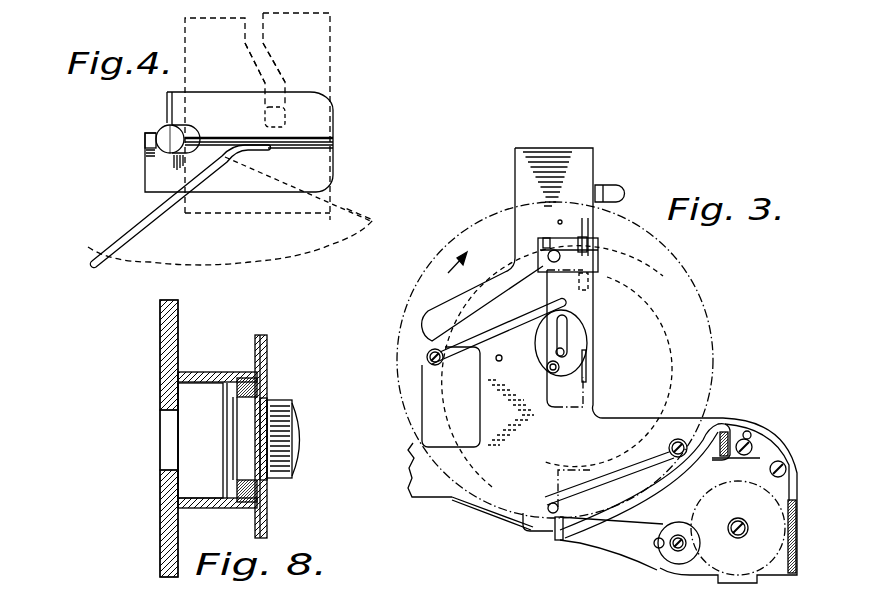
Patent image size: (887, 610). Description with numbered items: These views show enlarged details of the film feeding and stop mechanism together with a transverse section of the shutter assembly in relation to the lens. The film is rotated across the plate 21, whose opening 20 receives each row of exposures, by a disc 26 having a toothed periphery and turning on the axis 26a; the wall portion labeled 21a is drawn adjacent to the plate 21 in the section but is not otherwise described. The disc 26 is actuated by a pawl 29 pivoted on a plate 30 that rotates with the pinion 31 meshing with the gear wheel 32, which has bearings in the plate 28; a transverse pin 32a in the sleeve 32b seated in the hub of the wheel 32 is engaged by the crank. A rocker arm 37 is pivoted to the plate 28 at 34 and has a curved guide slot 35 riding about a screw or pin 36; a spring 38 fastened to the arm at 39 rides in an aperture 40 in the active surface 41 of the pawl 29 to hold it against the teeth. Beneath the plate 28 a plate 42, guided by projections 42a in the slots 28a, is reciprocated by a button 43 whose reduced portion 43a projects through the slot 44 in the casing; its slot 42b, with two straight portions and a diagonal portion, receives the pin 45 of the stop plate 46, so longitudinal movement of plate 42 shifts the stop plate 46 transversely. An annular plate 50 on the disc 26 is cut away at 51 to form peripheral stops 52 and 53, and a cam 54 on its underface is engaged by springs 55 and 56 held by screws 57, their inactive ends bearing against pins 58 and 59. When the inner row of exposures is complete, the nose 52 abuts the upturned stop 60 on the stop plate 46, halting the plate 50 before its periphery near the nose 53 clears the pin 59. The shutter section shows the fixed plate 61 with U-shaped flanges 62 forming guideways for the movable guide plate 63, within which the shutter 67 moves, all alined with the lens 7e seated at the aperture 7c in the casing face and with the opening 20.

In FIG. 8, the opening 20 is at (168, 460).
In FIG. 8, the plate 21 is at (160, 547).
In FIG. 8, the wall opening 21a is at (200, 502).
In FIG. 3, the disc 26 is at (640, 240).
In FIG. 3, the axis 26a is at (550, 366).
In FIG. 3, the plate 28 is at (563, 153).
In FIG. 3, the slots 28a is at (600, 251).
In FIG. 3, the pawl 29 is at (632, 545).
In FIG. 3, the plate 30 is at (738, 528).
In FIG. 3, the pinion 31 is at (677, 532).
In FIG. 3, the gear wheel 32 is at (780, 566).
In FIG. 3, the transverse pin 32a is at (745, 537).
In FIG. 3, the sleeve 32b is at (793, 520).
In FIG. 3, the pivot 34 is at (781, 465).
In FIG. 3, the curved guide slot 35 is at (765, 423).
In FIG. 3, the screw or pin 36 is at (745, 455).
In FIG. 3, the rocker arm 37 is at (645, 481).
In FIG. 3, the spring 38 is at (538, 533).
In FIG. 3, the fastening 39 is at (717, 428).
In FIG. 3, the aperture 40 is at (564, 540).
In FIG. 3, the active surface 41 is at (555, 537).
In FIG. 4, the plate 42 is at (330, 67).
In FIG. 3, the plate 42 is at (600, 307).
In FIG. 3, the projections 42a is at (603, 213).
In FIG. 4, the slot 42b is at (253, 50).
In FIG. 3, the slot 42b is at (600, 278).
In FIG. 3, the button 43 is at (563, 353).
In FIG. 3, the reduced portion 43a is at (577, 353).
In FIG. 3, the slot 44 is at (560, 373).
In FIG. 4, the pin 45 is at (281, 117).
In FIG. 3, the pin 45 is at (597, 242).
In FIG. 4, the stop plate 46 is at (317, 128).
In FIG. 3, the stop plate 46 is at (565, 242).
In FIG. 4, the annular plate 50 is at (343, 208).
In FIG. 3, the annular plate 50 is at (465, 467).
In FIG. 3, the cut-away portion 51 is at (657, 358).
In FIG. 3, the peripheral stop 52 is at (537, 235).
In FIG. 4, the peripheral stop 53 is at (165, 197).
In FIG. 3, the peripheral stop 53 is at (558, 480).
In FIG. 3, the cam 54 is at (600, 332).
In FIG. 4, the spring 55 is at (155, 228).
In FIG. 3, the spring 55 is at (499, 307).
In FIG. 3, the spring 56 is at (598, 425).
In FIG. 3, the screws 57 is at (427, 360).
In FIG. 4, the pin 58 is at (160, 142).
In FIG. 3, the pin 58 is at (482, 299).
In FIG. 3, the pin 59 is at (583, 487).
In FIG. 4, the upturned stop 60 is at (167, 108).
In FIG. 3, the upturned stop 60 is at (547, 238).
In FIG. 8, the fixed plate 61 is at (263, 397).
In FIG. 8, the U-shaped flanges 62 is at (210, 380).
In FIG. 8, the movable plate 63 is at (253, 430).
In FIG. 8, the shutter 67 is at (243, 430).
In FIG. 8, the aperture 7c is at (265, 447).
In FIG. 8, the lens 7e is at (283, 433).